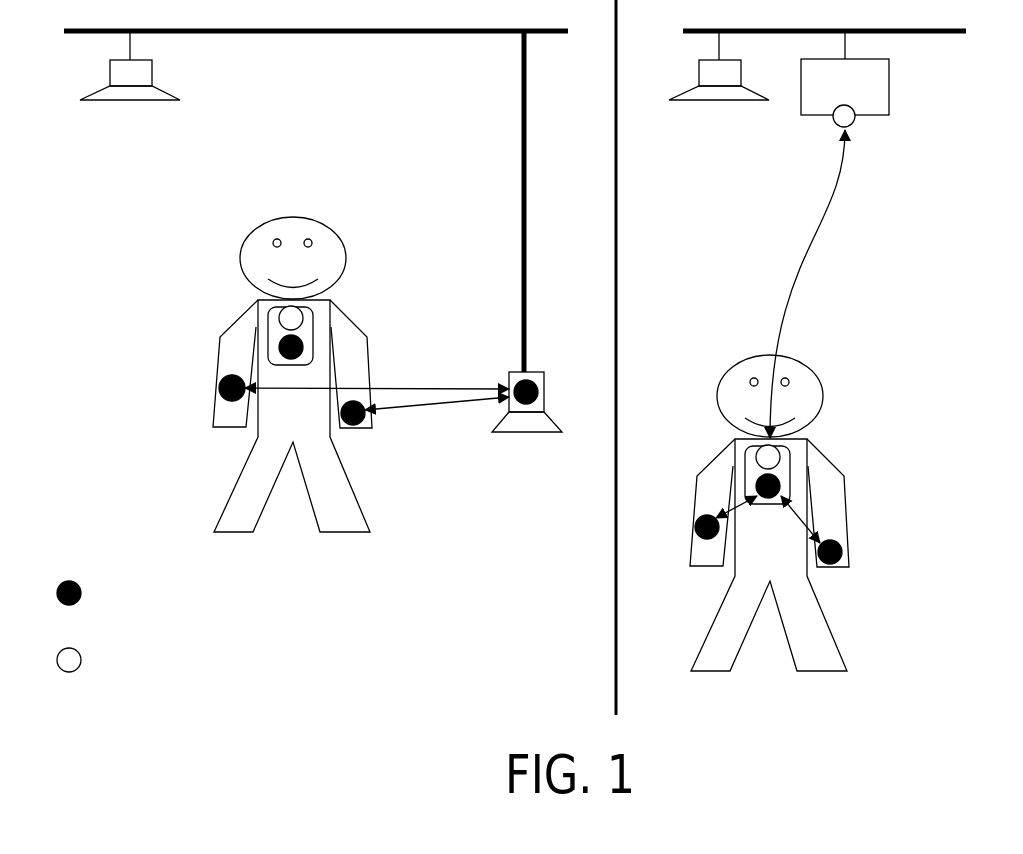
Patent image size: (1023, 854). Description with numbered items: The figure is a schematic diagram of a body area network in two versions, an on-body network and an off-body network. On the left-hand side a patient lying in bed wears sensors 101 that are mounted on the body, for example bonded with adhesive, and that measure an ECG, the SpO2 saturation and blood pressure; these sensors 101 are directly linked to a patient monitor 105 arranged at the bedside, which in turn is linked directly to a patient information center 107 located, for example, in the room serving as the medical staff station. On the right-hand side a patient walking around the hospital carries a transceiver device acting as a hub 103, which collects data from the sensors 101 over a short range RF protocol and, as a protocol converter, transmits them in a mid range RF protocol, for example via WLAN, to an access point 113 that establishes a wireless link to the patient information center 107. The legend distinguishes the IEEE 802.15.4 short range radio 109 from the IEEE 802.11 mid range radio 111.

The sensor 101 is at (221, 382).
The hub 103 is at (316, 318).
The patient monitor 105 is at (525, 435).
The patient information center 107 is at (115, 103).
The IEEE 802.15.4 short range radio 109 is at (83, 592).
The IEEE 802.11 mid range radio 111 is at (83, 660).
The access point 113 is at (893, 88).